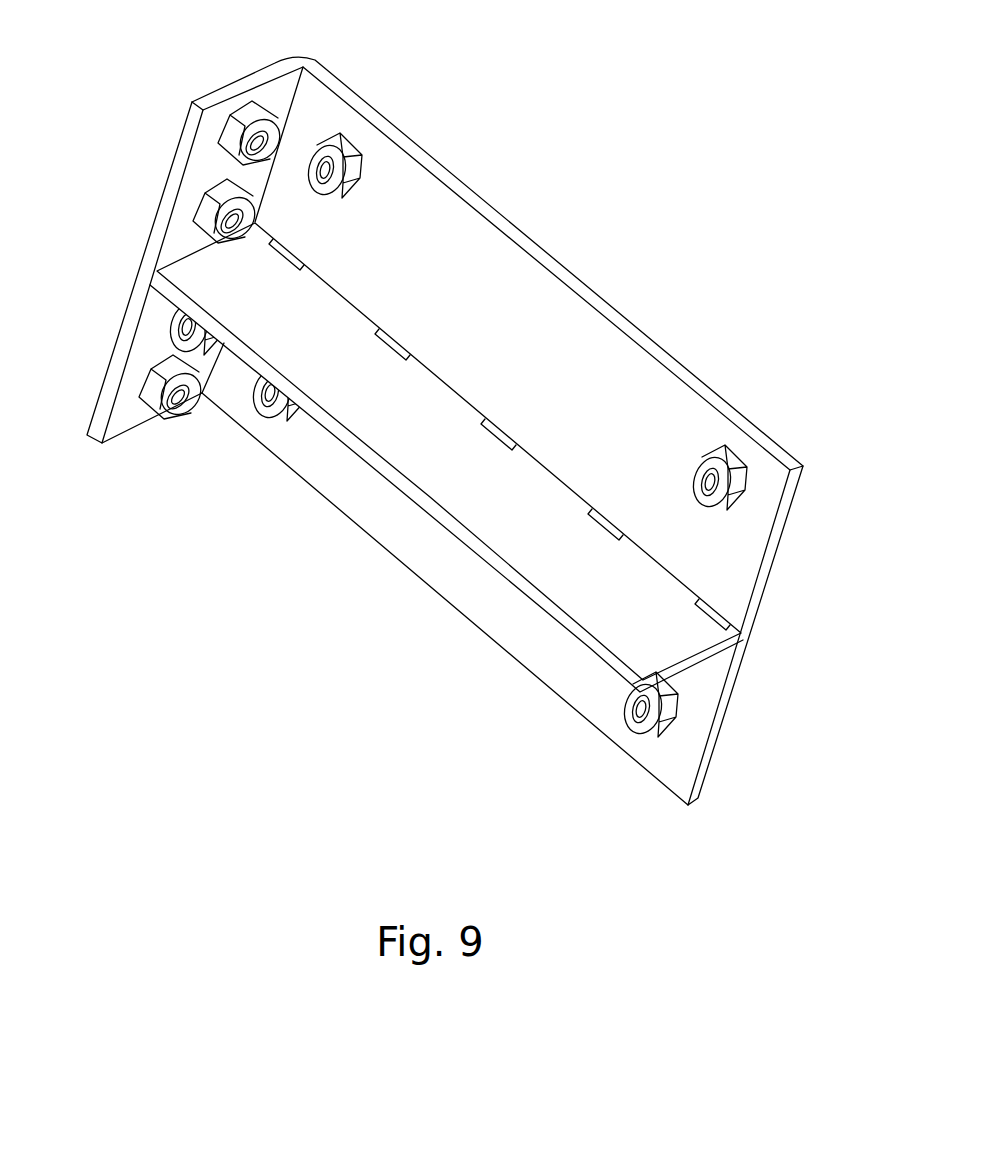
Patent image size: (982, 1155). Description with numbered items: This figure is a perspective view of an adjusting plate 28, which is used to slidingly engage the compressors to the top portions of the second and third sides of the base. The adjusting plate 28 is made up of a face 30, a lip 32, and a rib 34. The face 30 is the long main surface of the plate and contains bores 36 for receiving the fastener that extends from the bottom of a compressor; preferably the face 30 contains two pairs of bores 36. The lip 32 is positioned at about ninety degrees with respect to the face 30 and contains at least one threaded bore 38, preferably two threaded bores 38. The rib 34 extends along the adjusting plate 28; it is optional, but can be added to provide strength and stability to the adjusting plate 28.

The adjusting plate 28 is at (600, 184).
The face 30 is at (622, 322).
The lip 32 is at (147, 237).
The rib 34 is at (478, 470).
The bores 36 is at (717, 450).
The threaded bores 38 is at (182, 407).